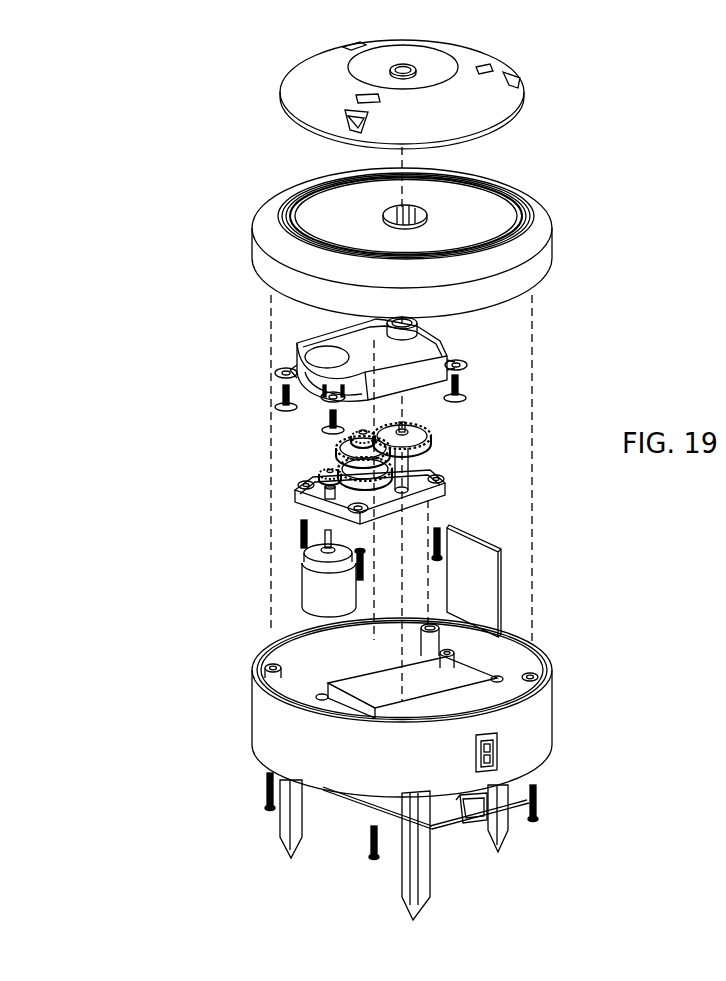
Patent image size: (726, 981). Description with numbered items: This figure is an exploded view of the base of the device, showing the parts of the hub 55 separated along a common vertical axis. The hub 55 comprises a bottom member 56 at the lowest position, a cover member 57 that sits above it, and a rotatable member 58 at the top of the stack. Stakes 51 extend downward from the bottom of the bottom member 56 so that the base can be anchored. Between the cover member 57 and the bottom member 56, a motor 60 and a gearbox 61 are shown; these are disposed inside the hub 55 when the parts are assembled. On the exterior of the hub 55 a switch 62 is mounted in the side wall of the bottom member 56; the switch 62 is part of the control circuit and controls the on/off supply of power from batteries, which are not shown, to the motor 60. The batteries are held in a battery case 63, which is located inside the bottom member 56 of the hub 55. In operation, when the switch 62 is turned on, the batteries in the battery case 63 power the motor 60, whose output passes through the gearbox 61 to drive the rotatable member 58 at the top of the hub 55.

The stakes 51 is at (428, 880).
The hub 55 is at (146, 310).
The bottom member 56 is at (580, 728).
The cover member 57 is at (580, 268).
The rotatable member 58 is at (568, 92).
The motor 60 is at (330, 594).
The gearbox 61 is at (242, 466).
The switch 62 is at (475, 756).
The battery case 63 is at (452, 700).